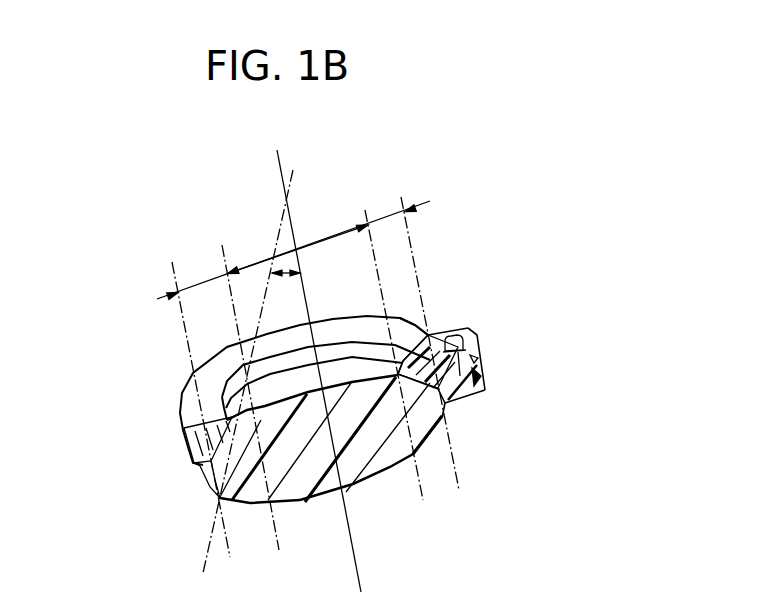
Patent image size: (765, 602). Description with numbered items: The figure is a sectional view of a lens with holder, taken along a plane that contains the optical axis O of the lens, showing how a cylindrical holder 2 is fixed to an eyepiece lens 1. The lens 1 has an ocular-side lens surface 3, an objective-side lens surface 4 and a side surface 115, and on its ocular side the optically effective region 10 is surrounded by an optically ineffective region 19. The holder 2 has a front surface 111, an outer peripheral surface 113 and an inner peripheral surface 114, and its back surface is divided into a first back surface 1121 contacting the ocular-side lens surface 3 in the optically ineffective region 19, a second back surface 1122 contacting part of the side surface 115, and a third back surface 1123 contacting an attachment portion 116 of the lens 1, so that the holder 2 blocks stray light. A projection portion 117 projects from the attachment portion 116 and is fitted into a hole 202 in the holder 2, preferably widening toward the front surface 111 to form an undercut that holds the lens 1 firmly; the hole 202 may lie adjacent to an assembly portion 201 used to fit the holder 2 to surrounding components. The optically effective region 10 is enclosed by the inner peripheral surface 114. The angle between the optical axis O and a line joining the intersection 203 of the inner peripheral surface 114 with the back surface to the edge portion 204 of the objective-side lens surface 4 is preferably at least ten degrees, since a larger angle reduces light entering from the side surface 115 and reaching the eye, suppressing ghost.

The lens 1 is at (299, 492).
The holder 2 is at (186, 447).
The ocular-side lens surface 3 is at (361, 380).
The objective-side lens surface 4 is at (369, 474).
The optically effective region 10 is at (251, 264).
The optically ineffective region 19 is at (200, 282).
The optical axis O is at (288, 209).
The front surface 111 is at (400, 322).
The first back surface 1121 is at (432, 335).
The second back surface 1122 is at (478, 380).
The third back surface 1123 is at (470, 397).
The outer peripheral surface 113 is at (466, 366).
The inner peripheral surface 114 is at (222, 396).
The side surface 115 is at (447, 420).
The attachment portion 116 is at (452, 400).
The projection portion 117 is at (468, 352).
The assembly portion 201 is at (475, 330).
The hole 202 is at (480, 341).
The intersection 203 is at (255, 508).
The edge portion 204 is at (218, 499).